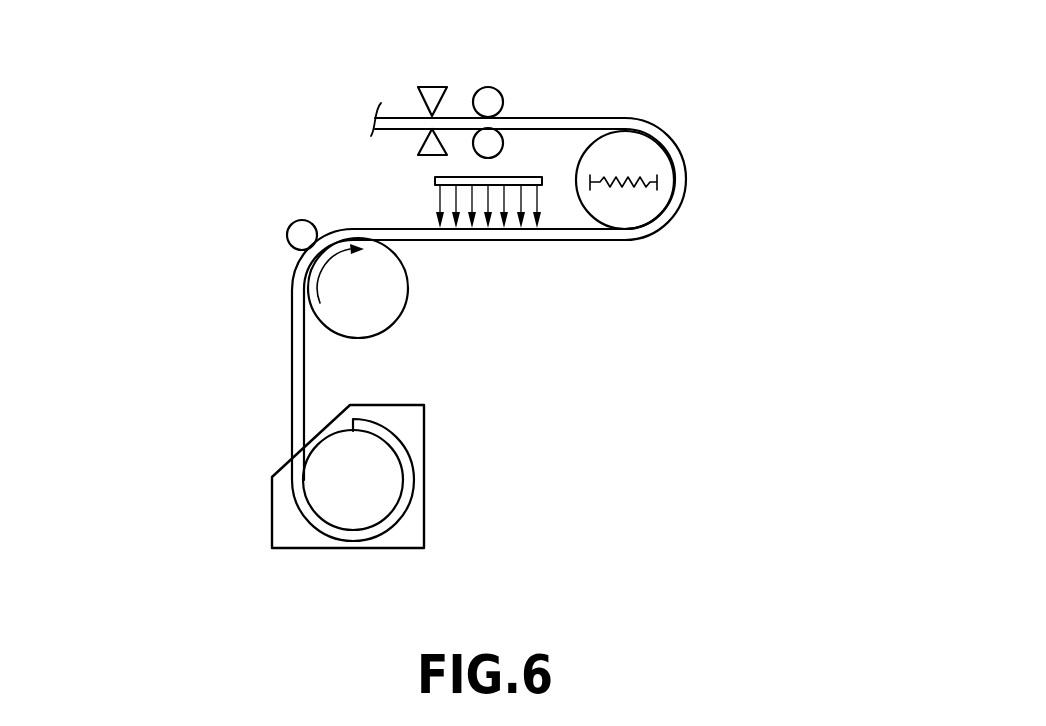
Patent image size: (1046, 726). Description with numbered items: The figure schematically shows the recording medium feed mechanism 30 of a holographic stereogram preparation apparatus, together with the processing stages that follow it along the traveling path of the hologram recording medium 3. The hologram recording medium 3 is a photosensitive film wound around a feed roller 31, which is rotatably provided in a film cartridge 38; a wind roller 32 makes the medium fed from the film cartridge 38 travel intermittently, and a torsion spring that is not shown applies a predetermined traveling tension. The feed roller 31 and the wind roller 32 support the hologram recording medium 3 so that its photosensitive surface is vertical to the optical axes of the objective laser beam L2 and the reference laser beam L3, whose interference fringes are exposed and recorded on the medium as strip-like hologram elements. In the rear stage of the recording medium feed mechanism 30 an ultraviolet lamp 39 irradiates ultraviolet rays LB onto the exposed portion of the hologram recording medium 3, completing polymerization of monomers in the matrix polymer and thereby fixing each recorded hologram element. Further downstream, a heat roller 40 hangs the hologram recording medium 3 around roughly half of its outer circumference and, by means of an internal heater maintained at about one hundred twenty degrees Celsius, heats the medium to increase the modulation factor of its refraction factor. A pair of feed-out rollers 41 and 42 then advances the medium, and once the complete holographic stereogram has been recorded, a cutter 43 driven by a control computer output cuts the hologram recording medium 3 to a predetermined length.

The hologram recording medium 3 is at (293, 354).
The recording medium feed mechanism 30 is at (568, 452).
The feed roller 31 is at (390, 488).
The wind roller 32 is at (390, 279).
The film cartridge 38 is at (417, 434).
The ultraviolet lamp 39 is at (455, 177).
The heat roller 40 is at (655, 156).
The feed-out roller 41 is at (500, 90).
The feed-out roller 42 is at (503, 148).
The cutter 43 is at (432, 86).
The ultraviolet rays LB is at (437, 218).
The objective laser beam L2 is at (232, 382).
The reference laser beam L3 is at (570, 387).